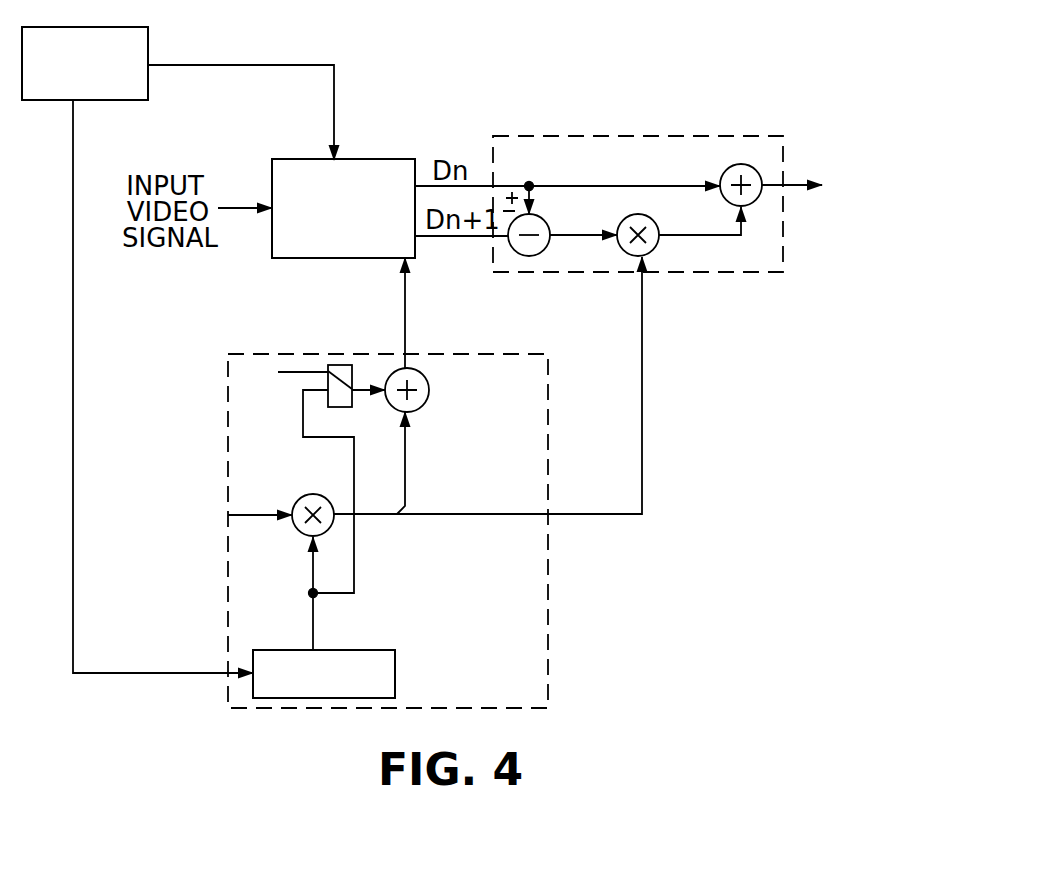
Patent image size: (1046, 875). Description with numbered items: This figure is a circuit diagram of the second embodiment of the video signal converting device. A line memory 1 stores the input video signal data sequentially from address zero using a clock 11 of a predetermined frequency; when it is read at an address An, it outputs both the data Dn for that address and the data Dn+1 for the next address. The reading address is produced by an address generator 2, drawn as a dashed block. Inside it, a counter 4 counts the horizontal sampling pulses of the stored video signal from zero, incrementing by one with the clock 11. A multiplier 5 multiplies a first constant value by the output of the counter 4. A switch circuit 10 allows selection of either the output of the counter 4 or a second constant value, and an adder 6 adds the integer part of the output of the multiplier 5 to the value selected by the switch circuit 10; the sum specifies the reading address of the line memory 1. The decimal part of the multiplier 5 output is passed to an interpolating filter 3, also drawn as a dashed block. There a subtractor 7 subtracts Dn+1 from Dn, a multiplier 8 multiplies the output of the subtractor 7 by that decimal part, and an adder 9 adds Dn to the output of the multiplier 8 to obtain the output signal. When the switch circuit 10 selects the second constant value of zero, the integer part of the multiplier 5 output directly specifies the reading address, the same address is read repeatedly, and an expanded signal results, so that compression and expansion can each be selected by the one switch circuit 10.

The line memory 1 is at (298, 158).
The address generator 2 is at (548, 653).
The interpolating filter 3 is at (627, 135).
The counter 4 is at (395, 657).
The multiplier 5 is at (303, 493).
The adder 6 is at (429, 389).
The subtractor 7 is at (543, 254).
The multiplier 8 is at (652, 252).
The adder 9 is at (758, 198).
The switch circuit 10 is at (337, 364).
The clock 11 is at (148, 37).